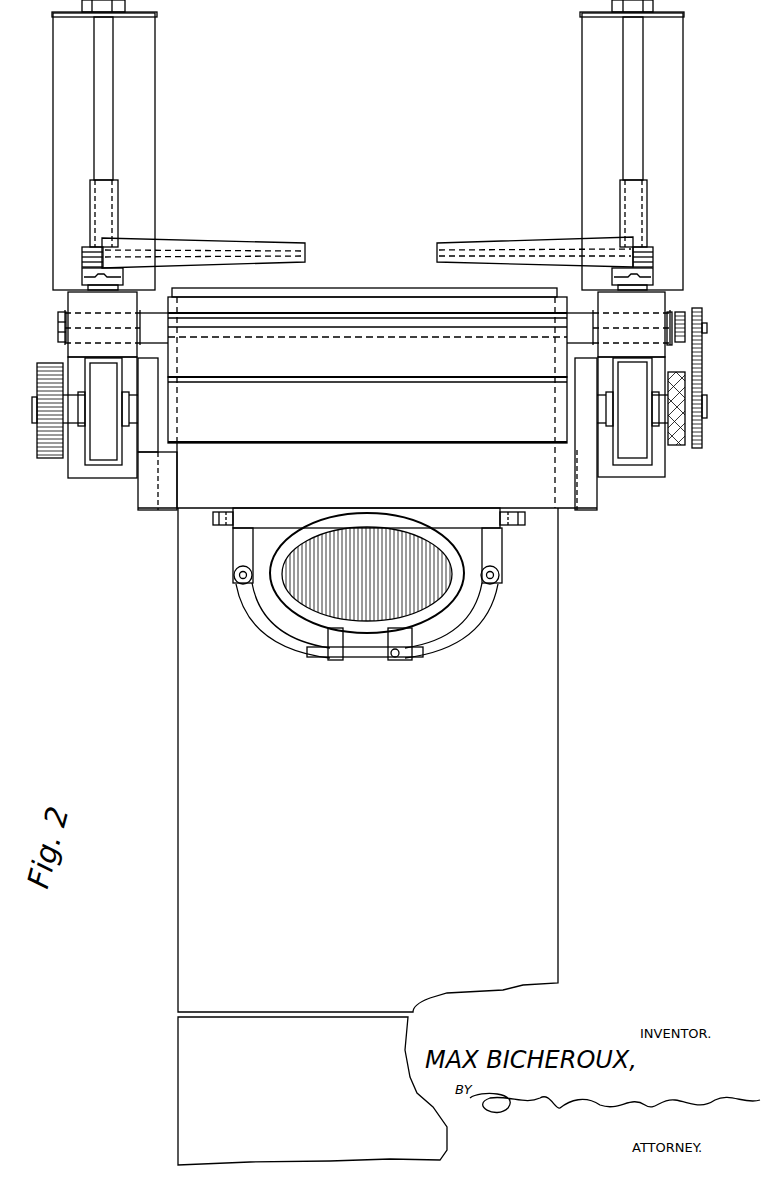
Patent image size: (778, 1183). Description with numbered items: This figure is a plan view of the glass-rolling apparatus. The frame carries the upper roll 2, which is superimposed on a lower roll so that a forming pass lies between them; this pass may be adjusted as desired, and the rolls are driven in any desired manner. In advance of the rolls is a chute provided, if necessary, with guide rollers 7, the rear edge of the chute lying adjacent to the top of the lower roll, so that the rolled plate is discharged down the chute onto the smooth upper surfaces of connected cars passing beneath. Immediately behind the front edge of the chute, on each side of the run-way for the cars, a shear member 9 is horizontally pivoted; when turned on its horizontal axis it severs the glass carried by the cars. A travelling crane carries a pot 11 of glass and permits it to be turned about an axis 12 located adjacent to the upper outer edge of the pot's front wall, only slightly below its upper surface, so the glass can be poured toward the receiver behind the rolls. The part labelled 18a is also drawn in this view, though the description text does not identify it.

The upper roll 2 is at (367, 410).
The guide rollers 7 is at (339, 321).
The shear member 9 is at (225, 243).
The pot 11 is at (286, 601).
The axis 12 is at (138, 497).
The cover plate 18a is at (369, 288).